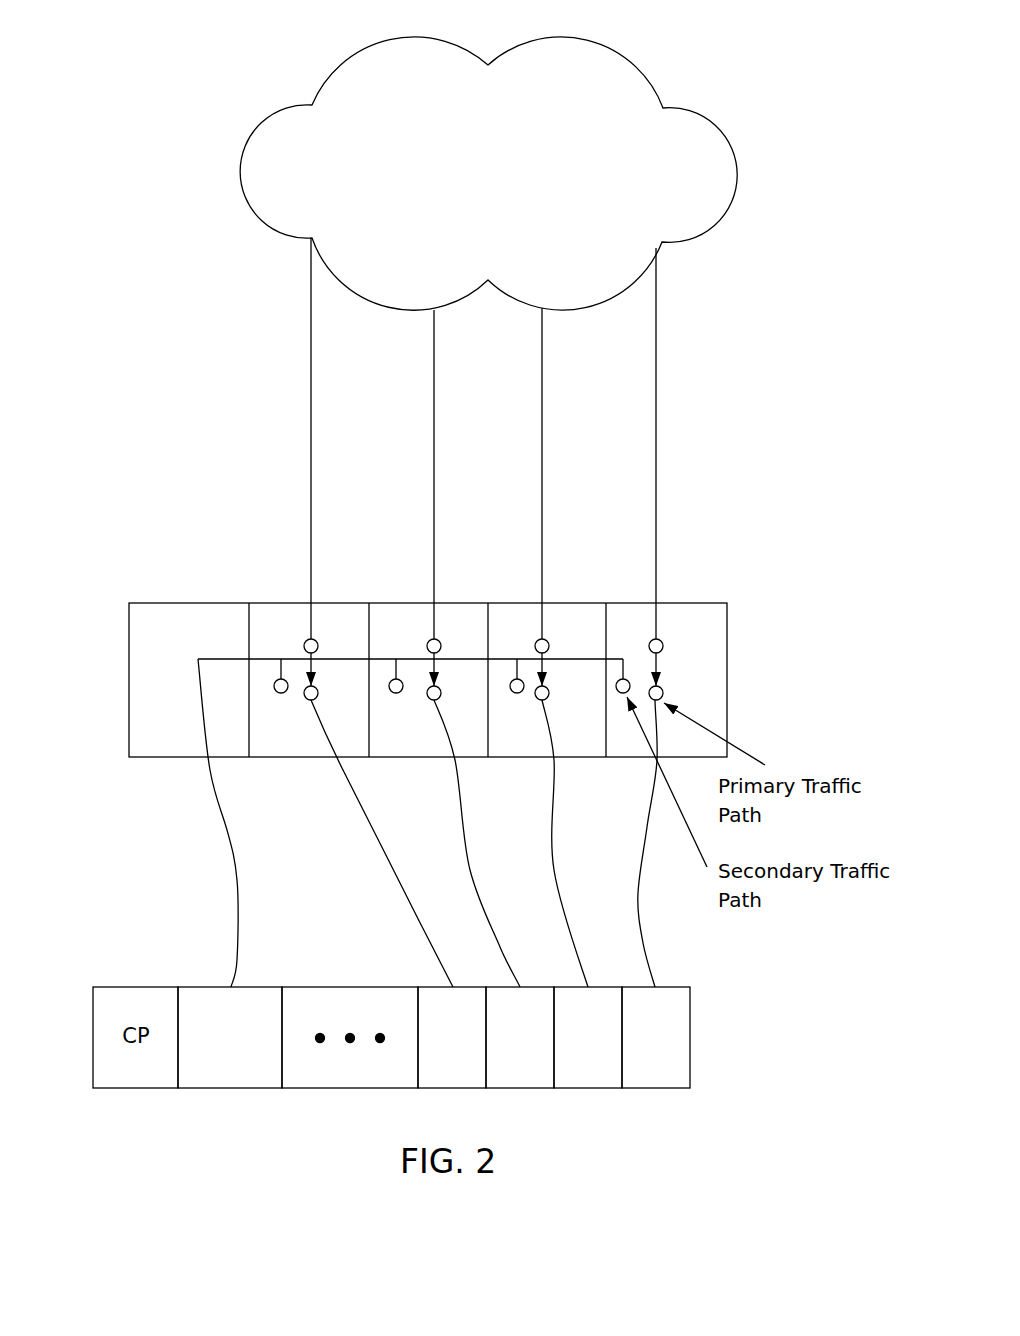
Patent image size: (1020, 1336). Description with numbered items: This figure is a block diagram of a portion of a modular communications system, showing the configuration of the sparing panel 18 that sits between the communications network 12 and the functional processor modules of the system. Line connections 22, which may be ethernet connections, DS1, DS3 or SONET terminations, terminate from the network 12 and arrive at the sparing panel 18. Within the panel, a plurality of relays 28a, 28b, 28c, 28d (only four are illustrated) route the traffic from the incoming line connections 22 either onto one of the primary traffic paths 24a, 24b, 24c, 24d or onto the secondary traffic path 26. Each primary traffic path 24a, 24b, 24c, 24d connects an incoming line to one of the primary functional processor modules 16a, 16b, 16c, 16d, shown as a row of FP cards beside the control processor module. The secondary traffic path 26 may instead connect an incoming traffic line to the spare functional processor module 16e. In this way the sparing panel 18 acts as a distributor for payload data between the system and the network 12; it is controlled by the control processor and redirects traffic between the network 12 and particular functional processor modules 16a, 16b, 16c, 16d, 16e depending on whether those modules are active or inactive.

The communications network 12 is at (737, 186).
The line connections 22 is at (656, 440).
The sparing panel 18 is at (727, 688).
The relay 28a is at (638, 638).
The relay 28b is at (528, 633).
The relay 28c is at (415, 632).
The relay 28d is at (285, 640).
The primary traffic path 24a is at (645, 830).
The primary traffic path 24b is at (553, 827).
The primary traffic path 24c is at (463, 840).
The primary traffic path 24d is at (376, 846).
The secondary traffic path 26 is at (235, 913).
The functional processor module 16a is at (638, 1065).
The functional processor module 16b is at (570, 1065).
The functional processor module 16c is at (502, 1065).
The functional processor module 16d is at (434, 1065).
The spare functional processor module 16e is at (250, 1077).